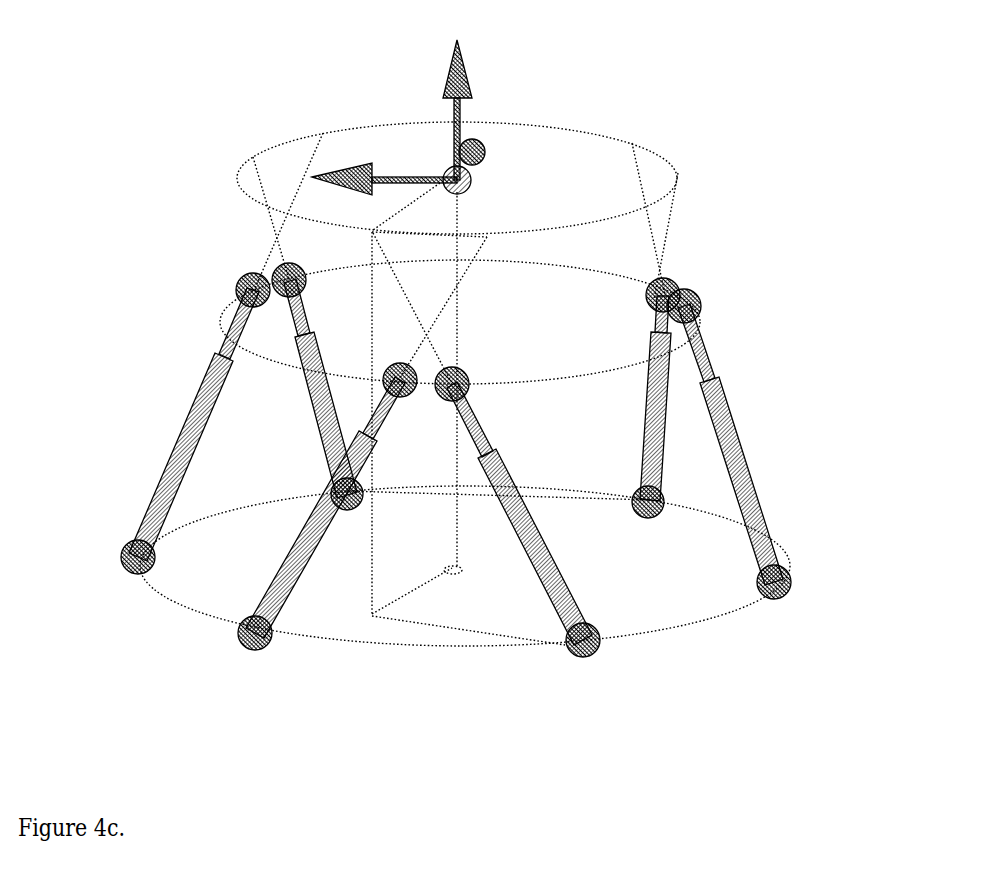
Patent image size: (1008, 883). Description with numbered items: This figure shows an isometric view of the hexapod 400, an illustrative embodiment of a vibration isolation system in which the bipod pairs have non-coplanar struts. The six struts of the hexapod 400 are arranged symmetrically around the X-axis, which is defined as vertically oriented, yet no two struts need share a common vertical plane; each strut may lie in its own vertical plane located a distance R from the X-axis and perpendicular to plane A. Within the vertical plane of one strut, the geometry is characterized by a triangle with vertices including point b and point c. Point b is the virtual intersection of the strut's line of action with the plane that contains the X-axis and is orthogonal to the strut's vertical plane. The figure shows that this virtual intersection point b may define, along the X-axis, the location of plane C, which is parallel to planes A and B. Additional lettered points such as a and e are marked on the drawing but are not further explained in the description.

The hexapod 400 is at (740, 220).
The joint point a on Plane A a is at (578, 648).
The virtual intersection point b is at (416, 422).
The point c is at (455, 606).
The reference point e is at (461, 558).